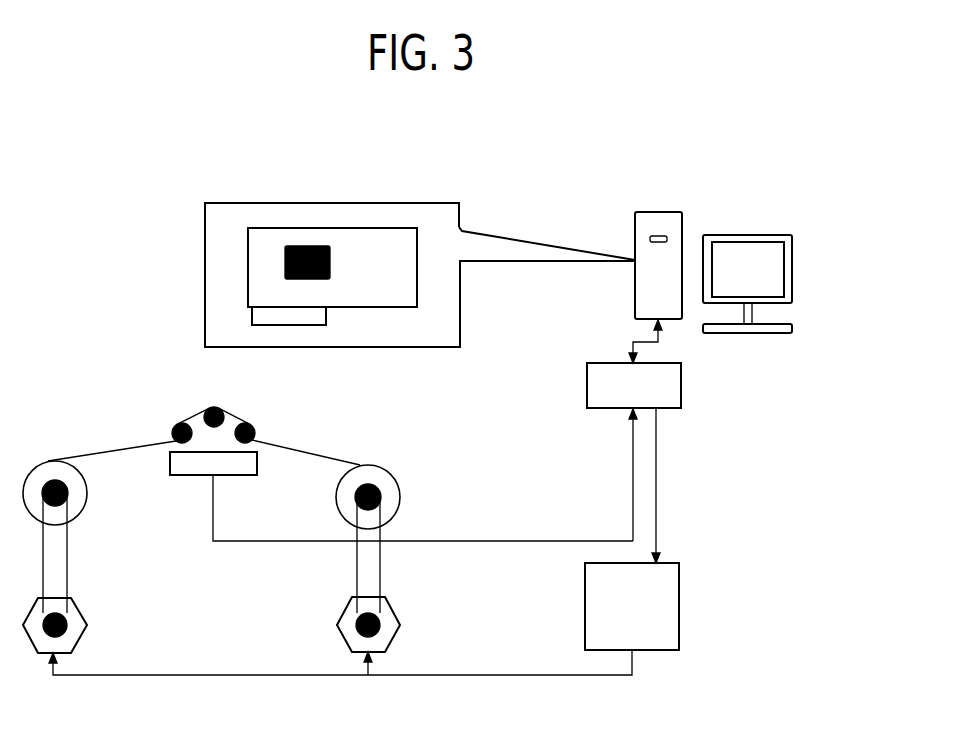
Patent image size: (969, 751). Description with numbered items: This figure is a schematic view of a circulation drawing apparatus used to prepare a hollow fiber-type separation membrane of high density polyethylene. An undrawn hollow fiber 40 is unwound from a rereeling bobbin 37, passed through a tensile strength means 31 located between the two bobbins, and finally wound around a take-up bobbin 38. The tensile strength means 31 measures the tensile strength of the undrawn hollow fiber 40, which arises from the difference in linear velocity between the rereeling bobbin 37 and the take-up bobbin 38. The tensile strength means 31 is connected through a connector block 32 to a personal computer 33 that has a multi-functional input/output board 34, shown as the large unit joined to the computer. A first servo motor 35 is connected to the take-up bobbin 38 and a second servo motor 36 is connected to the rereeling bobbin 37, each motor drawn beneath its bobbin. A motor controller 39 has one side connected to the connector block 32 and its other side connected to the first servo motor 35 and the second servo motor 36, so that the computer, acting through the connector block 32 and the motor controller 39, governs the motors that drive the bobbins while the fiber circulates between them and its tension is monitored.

The tensile strength means 31 is at (280, 458).
The connector block 32 is at (700, 387).
The personal computer 33 is at (812, 252).
The multi-functional input/output board 34 is at (190, 287).
The first servo motor 35 is at (100, 610).
The second servo motor 36 is at (413, 612).
The rereeling bobbin 37 is at (415, 472).
The take-up bobbin 38 is at (100, 526).
The motor controller 39 is at (697, 608).
The undrawn hollow fiber 40 is at (130, 448).